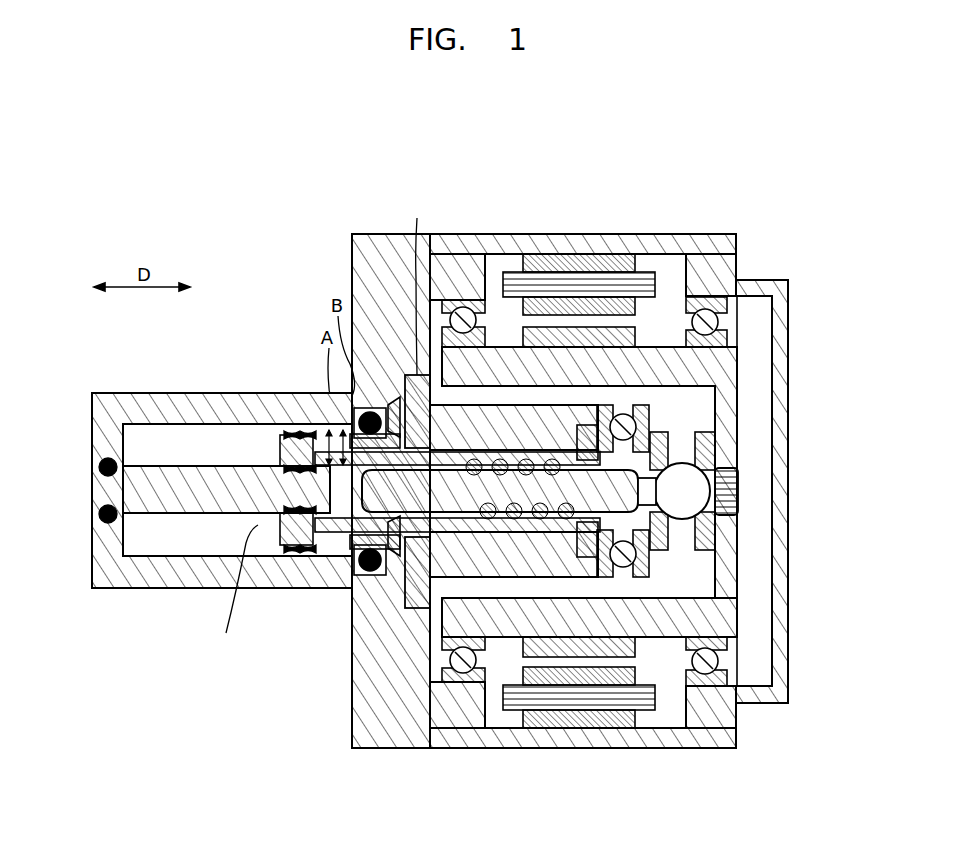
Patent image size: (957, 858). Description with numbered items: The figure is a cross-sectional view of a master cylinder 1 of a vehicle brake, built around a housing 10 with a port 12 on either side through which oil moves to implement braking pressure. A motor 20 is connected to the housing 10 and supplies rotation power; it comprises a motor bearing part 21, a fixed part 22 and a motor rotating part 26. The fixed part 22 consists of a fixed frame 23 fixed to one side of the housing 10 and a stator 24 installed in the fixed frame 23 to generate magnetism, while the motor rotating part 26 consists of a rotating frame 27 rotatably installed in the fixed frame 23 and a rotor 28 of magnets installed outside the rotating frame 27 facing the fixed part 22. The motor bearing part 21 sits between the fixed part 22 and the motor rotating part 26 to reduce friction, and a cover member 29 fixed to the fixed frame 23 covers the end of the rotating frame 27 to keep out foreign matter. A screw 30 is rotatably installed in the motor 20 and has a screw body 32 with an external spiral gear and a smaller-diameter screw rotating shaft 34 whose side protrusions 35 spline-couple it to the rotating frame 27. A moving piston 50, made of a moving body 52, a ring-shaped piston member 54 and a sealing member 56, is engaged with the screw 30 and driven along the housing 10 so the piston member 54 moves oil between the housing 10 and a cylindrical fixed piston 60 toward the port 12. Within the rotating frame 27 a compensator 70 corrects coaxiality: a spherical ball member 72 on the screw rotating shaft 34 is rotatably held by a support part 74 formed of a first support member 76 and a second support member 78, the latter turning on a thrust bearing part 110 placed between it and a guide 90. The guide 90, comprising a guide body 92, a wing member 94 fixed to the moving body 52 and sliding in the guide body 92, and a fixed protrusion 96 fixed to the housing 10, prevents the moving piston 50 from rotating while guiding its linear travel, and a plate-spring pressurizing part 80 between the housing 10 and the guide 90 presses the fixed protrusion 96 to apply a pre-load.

The master cylinder 1 is at (656, 196).
The housing 10 is at (220, 356).
The port 12 is at (127, 398).
The motor 20 is at (590, 228).
The motor bearing part 21 is at (736, 286).
The fixed part 22 is at (547, 168).
The fixed frame 23 is at (500, 324).
The stator 24 is at (490, 322).
The motor rotating part 26 is at (536, 800).
The rotating frame 27 is at (544, 695).
The rotor 28 is at (584, 679).
The cover member 29 is at (790, 454).
The screw 30 is at (344, 502).
The screw body 32 is at (395, 566).
The screw rotating shaft 34 is at (734, 448).
The side protrusions 35 is at (734, 494).
The moving piston 50 is at (270, 460).
The moving body 52 is at (460, 460).
The piston member 54 is at (286, 434).
The sealing member 56 is at (296, 434).
The fixed piston 60 is at (178, 490).
The compensator 70 is at (662, 562).
The ball member 72 is at (682, 520).
The support part 74 is at (842, 302).
The first support member 76 is at (704, 444).
The second support member 78 is at (640, 416).
The pressurizing part 80 is at (398, 438).
The guide 90 is at (698, 382).
The guide body 92 is at (585, 397).
The wing member 94 is at (706, 310).
The fixed protrusion 96 is at (402, 394).
The thrust bearing part 110 is at (742, 428).